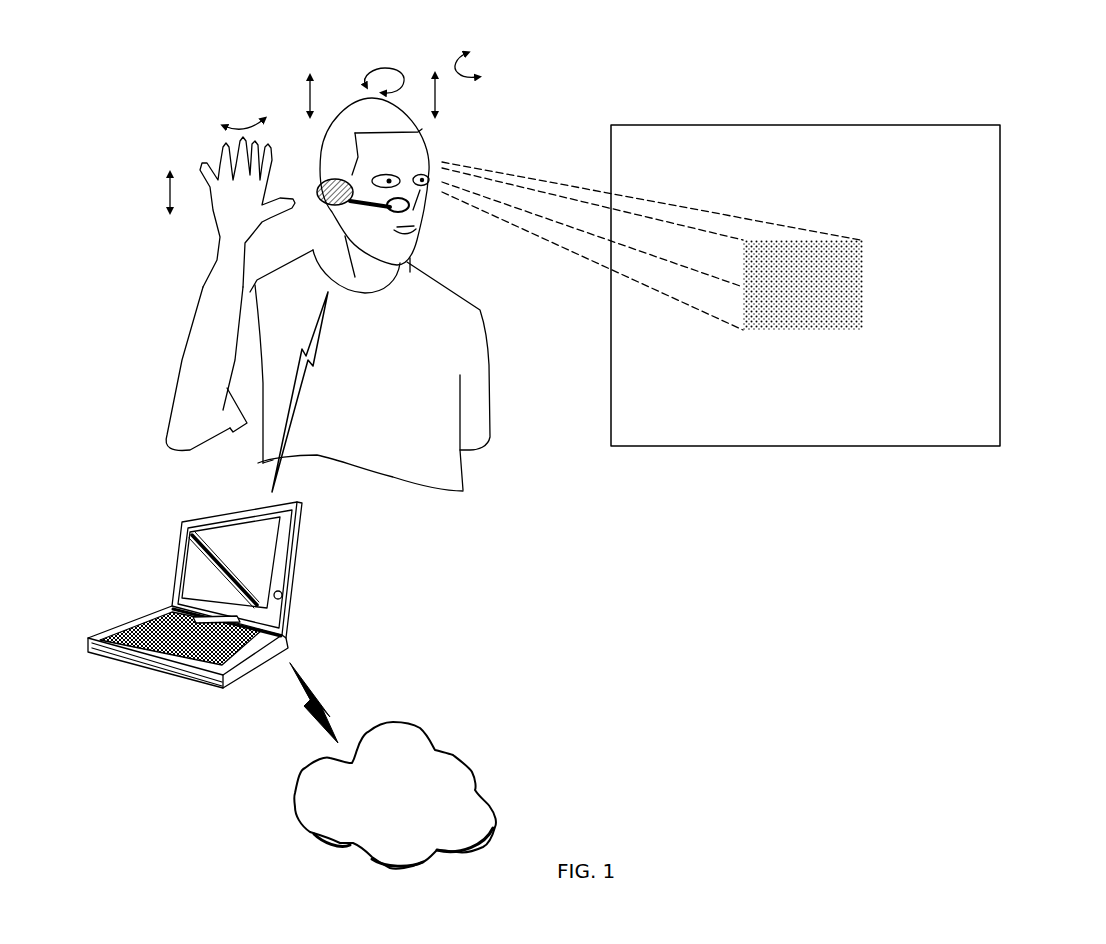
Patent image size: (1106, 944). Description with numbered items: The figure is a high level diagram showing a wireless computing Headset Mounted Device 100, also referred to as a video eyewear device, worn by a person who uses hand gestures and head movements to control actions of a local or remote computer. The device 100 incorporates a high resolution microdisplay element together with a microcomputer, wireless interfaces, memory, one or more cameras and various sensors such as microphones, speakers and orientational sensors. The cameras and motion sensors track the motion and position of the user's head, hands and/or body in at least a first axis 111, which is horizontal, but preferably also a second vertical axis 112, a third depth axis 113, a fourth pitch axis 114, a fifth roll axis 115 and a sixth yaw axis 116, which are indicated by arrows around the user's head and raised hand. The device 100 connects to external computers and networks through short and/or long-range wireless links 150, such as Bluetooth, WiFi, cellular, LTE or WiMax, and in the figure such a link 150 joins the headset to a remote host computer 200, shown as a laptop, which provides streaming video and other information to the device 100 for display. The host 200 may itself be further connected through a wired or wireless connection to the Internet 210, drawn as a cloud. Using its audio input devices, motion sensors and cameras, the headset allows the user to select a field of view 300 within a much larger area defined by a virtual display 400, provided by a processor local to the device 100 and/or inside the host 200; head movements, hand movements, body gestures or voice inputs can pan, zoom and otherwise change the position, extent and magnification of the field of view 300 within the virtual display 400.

The Headset Mounted Device 100 is at (348, 216).
The first axis 111 is at (440, 98).
The second axis 112 is at (305, 98).
The third axis 113 is at (168, 193).
The fourth axis 114 is at (228, 126).
The fifth axis 115 is at (453, 61).
The sixth axis 116 is at (364, 82).
The wireless link 150 is at (297, 417).
The remote host computer 200 is at (300, 560).
The Internet 210 is at (473, 775).
The field of view 300 is at (863, 283).
The virtual display 400 is at (698, 446).